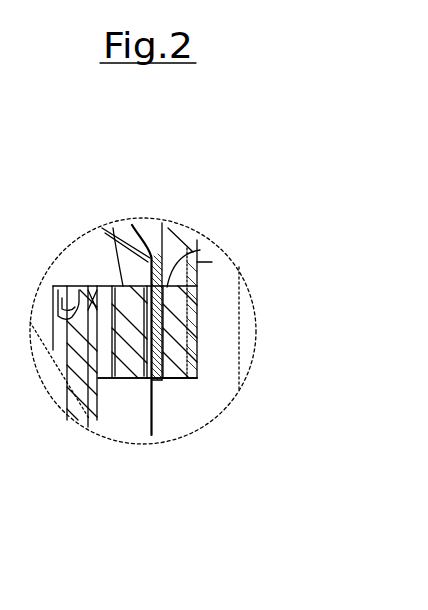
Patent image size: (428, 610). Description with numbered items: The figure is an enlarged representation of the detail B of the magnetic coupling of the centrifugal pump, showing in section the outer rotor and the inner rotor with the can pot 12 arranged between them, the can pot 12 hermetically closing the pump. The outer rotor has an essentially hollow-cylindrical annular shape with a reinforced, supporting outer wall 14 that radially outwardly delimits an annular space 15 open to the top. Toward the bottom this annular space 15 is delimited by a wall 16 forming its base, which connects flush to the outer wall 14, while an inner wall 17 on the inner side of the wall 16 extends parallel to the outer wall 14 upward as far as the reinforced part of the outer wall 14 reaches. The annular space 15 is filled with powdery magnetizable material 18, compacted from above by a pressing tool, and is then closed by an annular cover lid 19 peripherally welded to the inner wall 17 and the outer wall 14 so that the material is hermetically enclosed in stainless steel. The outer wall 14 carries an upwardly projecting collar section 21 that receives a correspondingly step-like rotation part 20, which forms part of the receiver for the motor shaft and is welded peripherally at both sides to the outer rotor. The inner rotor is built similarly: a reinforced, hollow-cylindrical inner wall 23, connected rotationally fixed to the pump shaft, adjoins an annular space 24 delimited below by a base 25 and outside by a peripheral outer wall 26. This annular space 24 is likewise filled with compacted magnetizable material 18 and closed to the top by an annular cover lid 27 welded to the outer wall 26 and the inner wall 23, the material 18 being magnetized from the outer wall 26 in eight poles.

The can pot 12 is at (132, 225).
The outer wall 14 is at (193, 350).
The annular space 15 is at (182, 295).
The wall 16 is at (178, 380).
The inner wall 17 is at (165, 362).
The magnetizable powdery material 18 is at (182, 336).
The annular cover lid 19 is at (200, 250).
The rotation part 20 is at (178, 228).
The collar section 21 is at (173, 307).
The inner wall 23 is at (107, 348).
The annular space 24 is at (120, 315).
The base 25 is at (147, 380).
The outer wall 26 is at (178, 383).
The annular cover lid 27 is at (118, 285).
The detail B is at (145, 447).